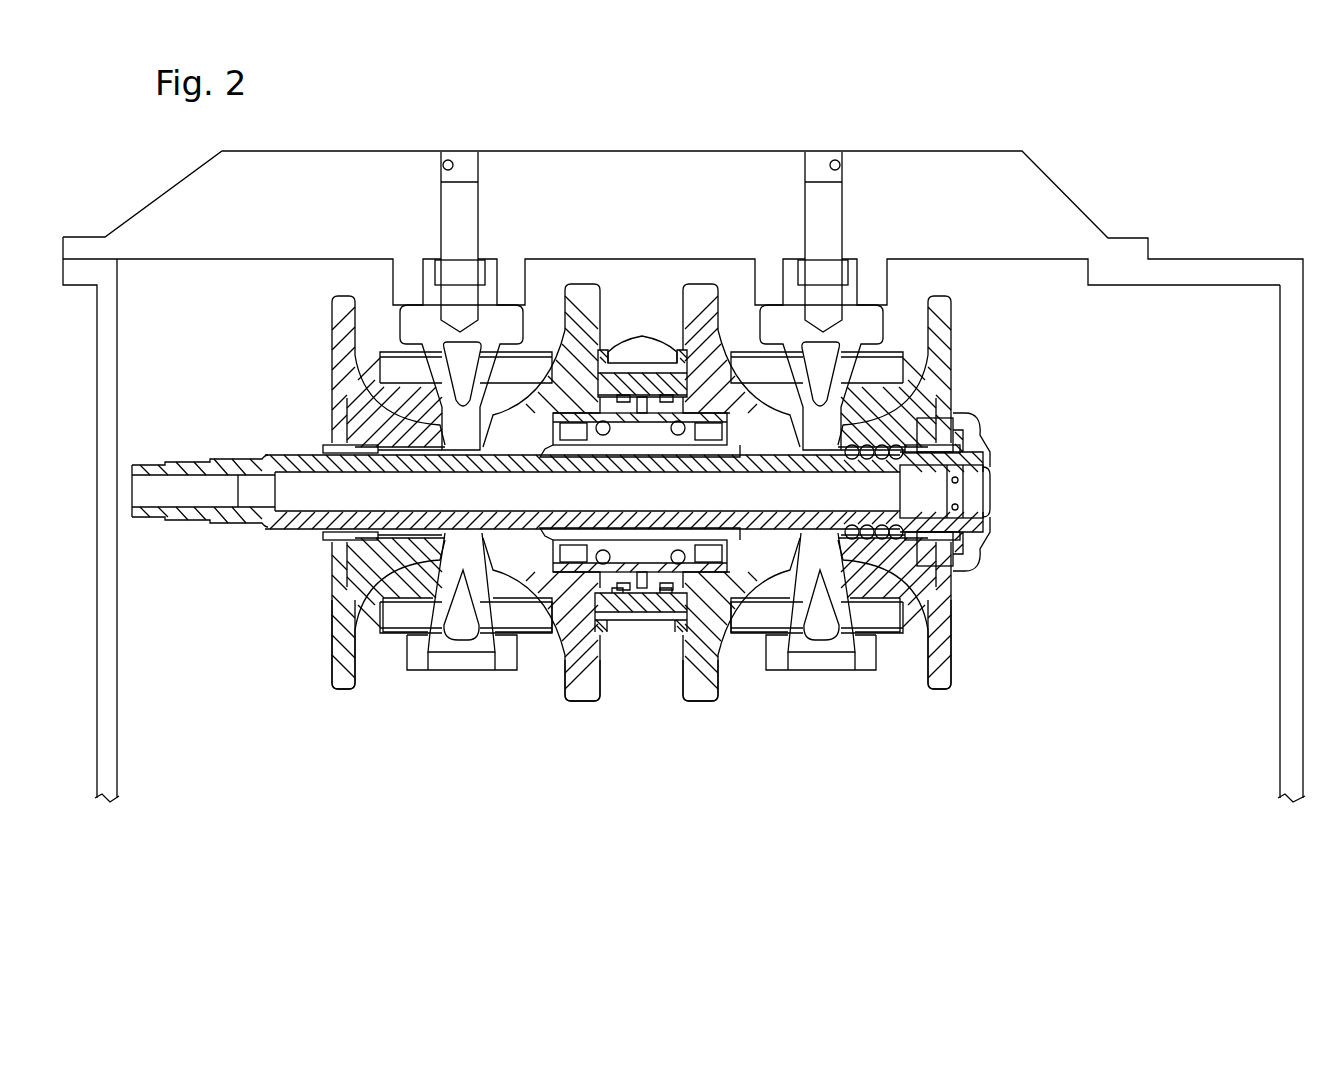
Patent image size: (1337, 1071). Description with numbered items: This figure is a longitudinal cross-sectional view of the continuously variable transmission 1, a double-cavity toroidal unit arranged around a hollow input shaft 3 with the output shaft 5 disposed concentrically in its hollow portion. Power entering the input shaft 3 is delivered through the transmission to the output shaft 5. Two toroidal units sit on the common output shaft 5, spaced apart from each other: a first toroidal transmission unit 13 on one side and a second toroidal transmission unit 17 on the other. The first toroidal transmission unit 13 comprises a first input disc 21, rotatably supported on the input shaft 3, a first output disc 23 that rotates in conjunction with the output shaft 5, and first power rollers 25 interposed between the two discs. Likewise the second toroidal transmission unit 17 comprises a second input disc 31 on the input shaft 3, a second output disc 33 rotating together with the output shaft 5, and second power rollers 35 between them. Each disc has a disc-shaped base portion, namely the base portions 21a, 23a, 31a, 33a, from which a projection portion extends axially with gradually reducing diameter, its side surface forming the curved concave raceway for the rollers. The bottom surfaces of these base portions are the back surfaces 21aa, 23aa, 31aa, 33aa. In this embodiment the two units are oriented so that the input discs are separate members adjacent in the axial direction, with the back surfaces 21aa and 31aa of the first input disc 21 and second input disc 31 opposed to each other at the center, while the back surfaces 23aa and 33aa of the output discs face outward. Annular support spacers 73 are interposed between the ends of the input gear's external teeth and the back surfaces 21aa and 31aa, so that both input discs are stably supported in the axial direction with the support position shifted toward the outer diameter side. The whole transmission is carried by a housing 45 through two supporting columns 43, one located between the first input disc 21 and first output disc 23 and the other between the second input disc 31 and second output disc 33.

The continuously variable transmission 1 is at (625, 472).
The input shaft 3 is at (612, 592).
The output shaft 5 is at (285, 460).
The first toroidal transmission unit 13 is at (431, 493).
The second toroidal transmission unit 17 is at (851, 502).
The first input disc 21 is at (601, 287).
The base portion of first input disc 21a is at (580, 689).
The back surface of first input disc 21aa is at (597, 693).
The first output disc 23 is at (332, 300).
The base portion of first output disc 23a is at (345, 689).
The back surface of first output disc 23aa is at (333, 627).
The first power rollers 25 is at (380, 370).
The second input disc 31 is at (681, 287).
The base portion of second input disc 31a is at (705, 693).
The back surface of second input disc 31aa is at (680, 693).
The second output disc 33 is at (950, 298).
The base portion of second output disc 33a is at (940, 689).
The back surface of second output disc 33aa is at (953, 625).
The second power rollers 35 is at (903, 370).
The supporting columns 43 is at (400, 322).
The housing 45 is at (1085, 212).
The support spacers 73 is at (652, 340).